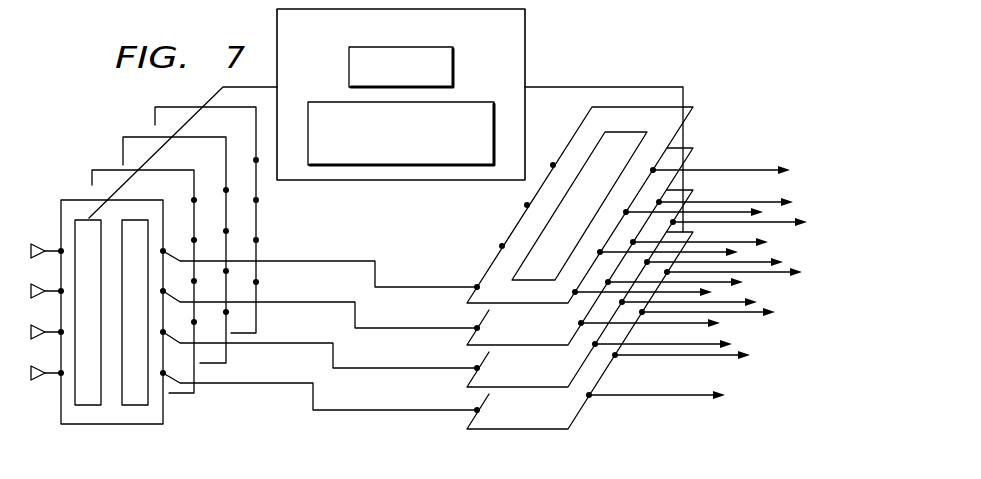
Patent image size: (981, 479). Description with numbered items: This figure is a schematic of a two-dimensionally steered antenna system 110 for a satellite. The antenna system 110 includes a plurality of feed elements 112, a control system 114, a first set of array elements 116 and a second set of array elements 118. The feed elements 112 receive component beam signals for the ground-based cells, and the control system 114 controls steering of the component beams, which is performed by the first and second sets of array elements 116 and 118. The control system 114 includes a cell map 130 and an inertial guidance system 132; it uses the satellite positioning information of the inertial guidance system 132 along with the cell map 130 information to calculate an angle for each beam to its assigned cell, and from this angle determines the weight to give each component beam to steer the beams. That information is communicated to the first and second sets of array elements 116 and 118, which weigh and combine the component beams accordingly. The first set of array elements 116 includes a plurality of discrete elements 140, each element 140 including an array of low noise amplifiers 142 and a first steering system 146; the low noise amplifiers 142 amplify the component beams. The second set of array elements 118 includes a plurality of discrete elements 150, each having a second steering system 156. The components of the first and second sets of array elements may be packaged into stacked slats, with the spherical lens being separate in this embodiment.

The antenna system 110 is at (632, 257).
The feed elements 112 is at (92, 332).
The control system 114 is at (433, 94).
The first set of array elements 116 is at (146, 246).
The second set of array elements 118 is at (596, 205).
The cell map 130 is at (349, 66).
The inertial guidance system 132 is at (474, 101).
The element 140 is at (156, 121).
The low noise amplifiers 142 is at (88, 407).
The first steering system 146 is at (135, 407).
The elements 150 is at (480, 334).
The second steering system 156 is at (545, 230).